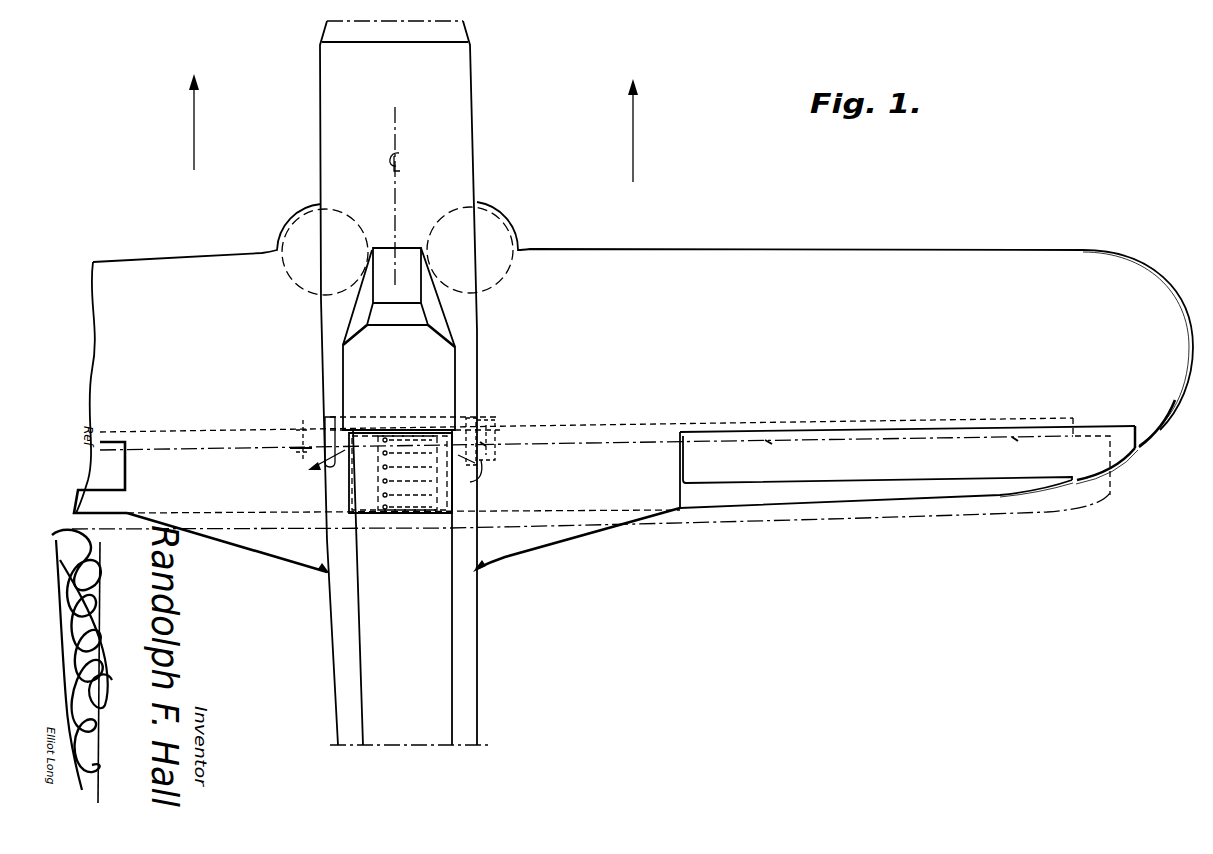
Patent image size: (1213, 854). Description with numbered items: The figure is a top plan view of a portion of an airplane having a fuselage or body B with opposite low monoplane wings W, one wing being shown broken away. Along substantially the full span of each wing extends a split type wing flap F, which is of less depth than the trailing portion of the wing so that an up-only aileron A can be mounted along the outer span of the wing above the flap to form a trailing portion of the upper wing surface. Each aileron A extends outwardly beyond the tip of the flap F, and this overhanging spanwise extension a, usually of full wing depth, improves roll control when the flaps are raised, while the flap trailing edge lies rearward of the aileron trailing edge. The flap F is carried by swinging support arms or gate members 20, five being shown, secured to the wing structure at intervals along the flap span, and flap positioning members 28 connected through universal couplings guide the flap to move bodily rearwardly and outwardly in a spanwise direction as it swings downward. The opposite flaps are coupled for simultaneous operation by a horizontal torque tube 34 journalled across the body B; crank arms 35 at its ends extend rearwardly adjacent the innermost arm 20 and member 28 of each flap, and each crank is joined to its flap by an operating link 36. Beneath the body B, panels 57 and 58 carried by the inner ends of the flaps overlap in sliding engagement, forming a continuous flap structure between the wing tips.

The fuselage or body B is at (458, 164).
The wings W is at (168, 252).
The wing flap F is at (143, 468).
The aileron A is at (952, 452).
The aileron extension a is at (1121, 448).
The swinging support arms 20 is at (201, 444).
The flap positioning members 28 is at (481, 440).
The torque tube 34 is at (418, 422).
The crank arms 35 is at (318, 425).
The operating link 36 is at (470, 482).
The panel 57 is at (383, 500).
The panel 58 is at (445, 504).